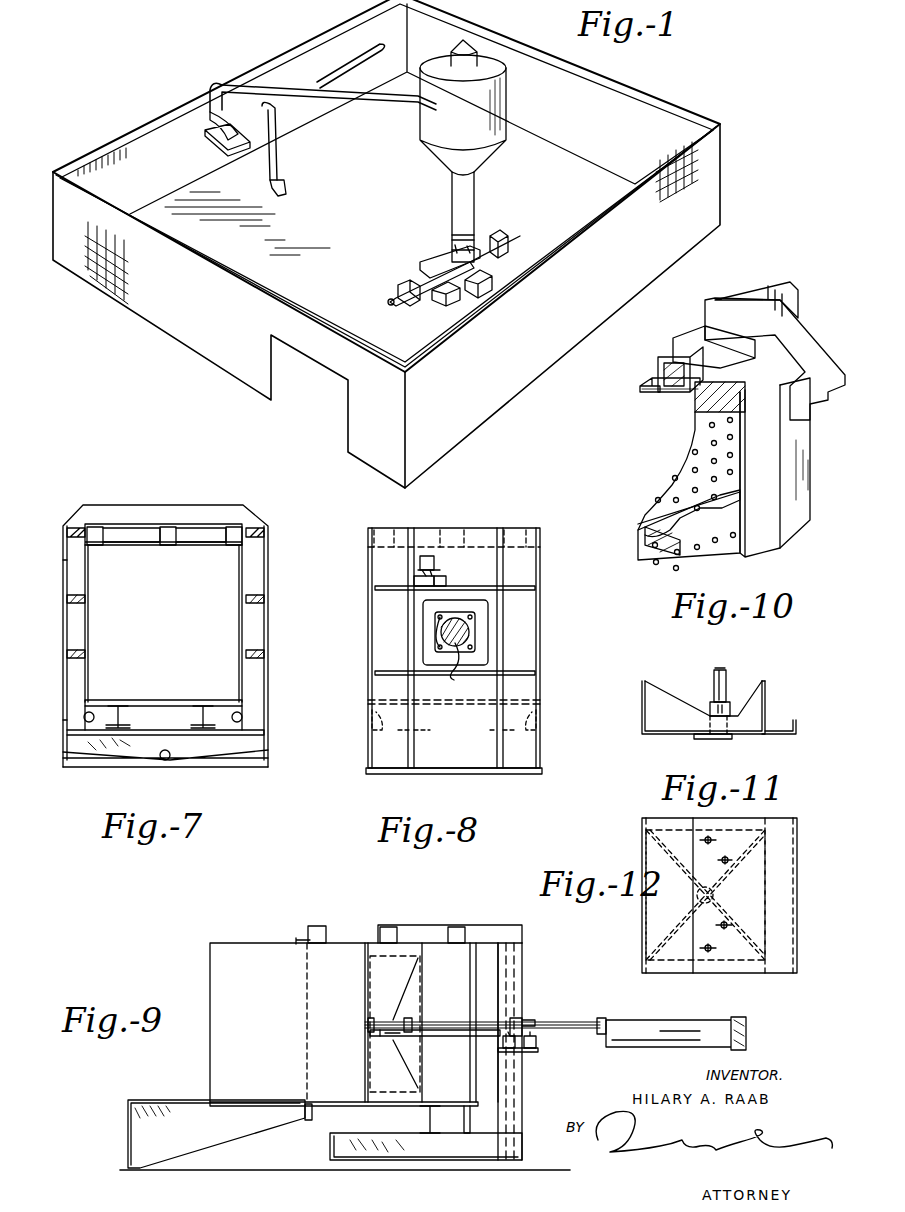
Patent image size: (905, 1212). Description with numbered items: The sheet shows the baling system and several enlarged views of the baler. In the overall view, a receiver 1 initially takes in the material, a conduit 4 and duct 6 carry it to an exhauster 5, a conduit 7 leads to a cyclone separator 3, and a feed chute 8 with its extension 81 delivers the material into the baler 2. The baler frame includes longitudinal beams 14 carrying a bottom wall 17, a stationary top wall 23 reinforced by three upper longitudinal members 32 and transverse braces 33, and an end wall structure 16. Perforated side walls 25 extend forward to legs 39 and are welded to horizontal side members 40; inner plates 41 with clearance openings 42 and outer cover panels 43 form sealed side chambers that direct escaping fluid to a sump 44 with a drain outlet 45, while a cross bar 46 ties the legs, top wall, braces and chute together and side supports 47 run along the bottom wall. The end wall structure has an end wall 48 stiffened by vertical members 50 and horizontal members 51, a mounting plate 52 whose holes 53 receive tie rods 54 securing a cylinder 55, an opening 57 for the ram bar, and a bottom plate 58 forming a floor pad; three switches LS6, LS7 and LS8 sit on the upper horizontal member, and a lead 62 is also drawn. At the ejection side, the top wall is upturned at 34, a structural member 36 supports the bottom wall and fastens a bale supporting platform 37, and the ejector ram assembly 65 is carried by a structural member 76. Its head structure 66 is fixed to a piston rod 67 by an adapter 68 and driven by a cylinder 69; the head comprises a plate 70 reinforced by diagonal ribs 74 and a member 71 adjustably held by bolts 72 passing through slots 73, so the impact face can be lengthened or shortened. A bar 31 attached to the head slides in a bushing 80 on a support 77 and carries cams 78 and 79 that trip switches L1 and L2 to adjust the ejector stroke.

In FIG. 1, the receiver 1 is at (284, 190).
In FIG. 1, the baler 2 is at (430, 266).
In FIG. 1, the cyclone separator 3 is at (430, 118).
In FIG. 1, the conduit 4 is at (282, 154).
In FIG. 1, the exhauster 5 is at (212, 120).
In FIG. 1, the duct 6 is at (362, 50).
In FIG. 1, the conduit 7 is at (348, 90).
In FIG. 1, the feed chute 8 is at (452, 246).
In FIG. 10, the feed chute 8 is at (790, 296).
In FIG. 1, the chute extension 81 is at (476, 202).
In FIG. 7, the longitudinal beams 14 is at (120, 720).
In FIG. 9, the longitudinal beams 14 is at (430, 1118).
In FIG. 8, the end wall structure 16 is at (542, 766).
In FIG. 9, the end wall structure 16 is at (366, 1022).
In FIG. 7, the bottom wall 17 is at (156, 700).
In FIG. 8, the bottom wall 17 is at (446, 705).
In FIG. 9, the bottom wall 17 is at (400, 1106).
In FIG. 10, the top wall 23 is at (652, 384).
In FIG. 7, the top wall 23 is at (190, 548).
In FIG. 10, the perforated side walls 25 is at (670, 478).
In FIG. 7, the perforated side walls 25 is at (238, 578).
In FIG. 9, the bar 31 is at (570, 1030).
In FIG. 10, the upper longitudinal members 32 is at (672, 358).
In FIG. 7, the upper longitudinal members 32 is at (80, 512).
In FIG. 8, the upper longitudinal members 32 is at (368, 539).
In FIG. 9, the upper longitudinal members 32 is at (318, 926).
In FIG. 10, the transverse braces 33 is at (698, 336).
In FIG. 7, the transverse braces 33 is at (133, 540).
In FIG. 9, the transverse braces 33 is at (430, 926).
In FIG. 9, the upturned side edge 34 is at (296, 940).
In FIG. 9, the structural member 36 is at (316, 1120).
In FIG. 9, the bale supporting platform 37 is at (162, 1100).
In FIG. 10, the legs 39 is at (805, 420).
In FIG. 10, the horizontal side members 40 is at (746, 408).
In FIG. 7, the horizontal side members 40 is at (70, 530).
In FIG. 10, the inner plates 41 is at (660, 524).
In FIG. 7, the inner plates 41 is at (72, 596).
In FIG. 10, the clearance openings 42 is at (680, 506).
In FIG. 10, the outer cover panels 43 is at (772, 450).
In FIG. 7, the outer cover panels 43 is at (266, 562).
In FIG. 7, the sump 44 is at (228, 748).
In FIG. 7, the drain outlet 45 is at (163, 750).
In FIG. 10, the cross bar 46 is at (803, 340).
In FIG. 7, the cross bar 46 is at (214, 508).
In FIG. 7, the side supports 47 is at (82, 720).
In FIG. 8, the side supports 47 is at (372, 730).
In FIG. 9, the side supports 47 is at (470, 1118).
In FIG. 8, the end wall 48 is at (526, 573).
In FIG. 8, the vertical members 50 is at (416, 528).
In FIG. 8, the horizontal members 51 is at (525, 592).
In FIG. 8, the mounting plate 52 is at (480, 644).
In FIG. 8, the holes 53 is at (435, 645).
In FIG. 8, the tie rods 54 is at (474, 617).
In FIG. 8, the cylinder 55 is at (470, 630).
In FIG. 8, the opening 57 is at (436, 558).
In FIG. 8, the bottom plate 58 is at (518, 776).
In FIG. 8, the lead 62 is at (456, 674).
In FIG. 9, the ejector ram assembly 65 is at (535, 966).
In FIG. 11, the head structure 66 is at (766, 682).
In FIG. 12, the head structure 66 is at (794, 820).
In FIG. 9, the head structure 66 is at (366, 1005).
In FIG. 11, the piston rod 67 is at (712, 676).
In FIG. 9, the piston rod 67 is at (450, 1036).
In FIG. 11, the adapter 68 is at (710, 702).
In FIG. 9, the adapter 68 is at (384, 1040).
In FIG. 9, the cylinder 69 is at (708, 1022).
In FIG. 11, the plate 70 is at (643, 696).
In FIG. 12, the plate 70 is at (648, 926).
In FIG. 11, the member 71 is at (786, 728).
In FIG. 12, the member 71 is at (786, 862).
In FIG. 11, the bolts 72 is at (724, 740).
In FIG. 12, the bolts 72 is at (740, 906).
In FIG. 12, the slots 73 is at (720, 858).
In FIG. 11, the diagonal ribs 74 is at (648, 720).
In FIG. 12, the diagonal ribs 74 is at (686, 866).
In FIG. 9, the diagonal ribs 74 is at (376, 986).
In FIG. 9, the structural member 76 is at (522, 1105).
In FIG. 9, the support 77 is at (512, 1052).
In FIG. 9, the cam 78 is at (416, 1018).
In FIG. 9, the cam 79 is at (602, 1018).
In FIG. 9, the bushing 80 is at (520, 1016).
In FIG. 8, the switch LS6 is at (414, 580).
In FIG. 8, the switch LS7 is at (446, 580).
In FIG. 8, the switch LS8 is at (418, 568).
In FIG. 9, the switch L1 is at (504, 1052).
In FIG. 9, the switch L2 is at (540, 1048).